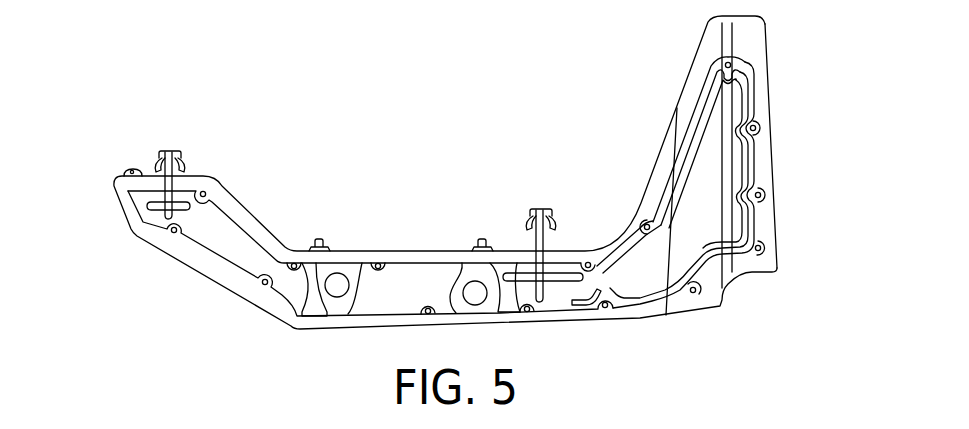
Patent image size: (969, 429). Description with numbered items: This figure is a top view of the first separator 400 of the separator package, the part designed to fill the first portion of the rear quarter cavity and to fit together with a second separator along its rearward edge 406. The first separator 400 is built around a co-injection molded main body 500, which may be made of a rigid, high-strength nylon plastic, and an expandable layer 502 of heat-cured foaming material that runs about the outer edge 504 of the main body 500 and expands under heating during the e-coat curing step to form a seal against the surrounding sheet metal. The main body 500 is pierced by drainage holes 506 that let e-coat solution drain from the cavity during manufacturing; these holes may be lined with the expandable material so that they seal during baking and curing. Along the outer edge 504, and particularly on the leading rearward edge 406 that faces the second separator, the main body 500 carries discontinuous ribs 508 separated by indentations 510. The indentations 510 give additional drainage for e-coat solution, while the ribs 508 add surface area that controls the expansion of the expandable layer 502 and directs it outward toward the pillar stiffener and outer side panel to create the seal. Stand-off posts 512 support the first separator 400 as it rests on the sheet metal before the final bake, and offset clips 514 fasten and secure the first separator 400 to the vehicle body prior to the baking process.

The first separator 400 is at (100, 197).
The rearward edge 406 is at (780, 70).
The main body 500 is at (686, 211).
The expandable layer 502 is at (768, 146).
The outer edge 504 is at (700, 118).
The drainage holes 506 is at (334, 282).
The discontinuous ribs 508 is at (759, 170).
The indentations 510 is at (758, 128).
The stand-off posts 512 is at (318, 239).
The offset clips 514 is at (170, 150).